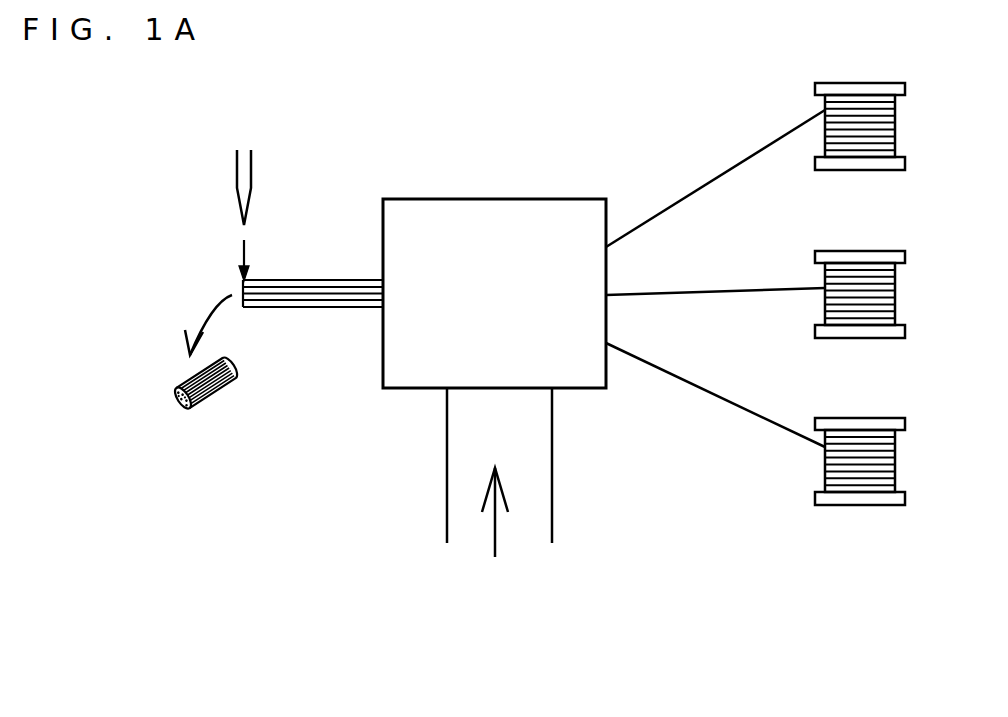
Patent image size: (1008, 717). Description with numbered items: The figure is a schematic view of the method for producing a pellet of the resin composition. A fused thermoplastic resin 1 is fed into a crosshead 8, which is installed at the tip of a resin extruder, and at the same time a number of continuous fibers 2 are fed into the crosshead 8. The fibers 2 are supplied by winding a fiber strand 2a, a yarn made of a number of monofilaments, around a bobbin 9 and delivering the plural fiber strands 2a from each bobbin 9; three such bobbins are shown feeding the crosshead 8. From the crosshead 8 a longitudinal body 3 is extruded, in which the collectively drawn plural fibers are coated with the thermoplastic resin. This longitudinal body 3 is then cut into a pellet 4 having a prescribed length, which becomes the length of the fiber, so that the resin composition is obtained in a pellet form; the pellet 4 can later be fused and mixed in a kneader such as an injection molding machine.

The fused thermoplastic resin 1 is at (499, 493).
The continuous fibers 2 is at (725, 170).
The fiber strand 2a is at (741, 230).
The longitudinal body 3 is at (290, 283).
The pellet 4 is at (213, 403).
The crosshead 8 is at (482, 210).
The bobbin 9 is at (858, 170).